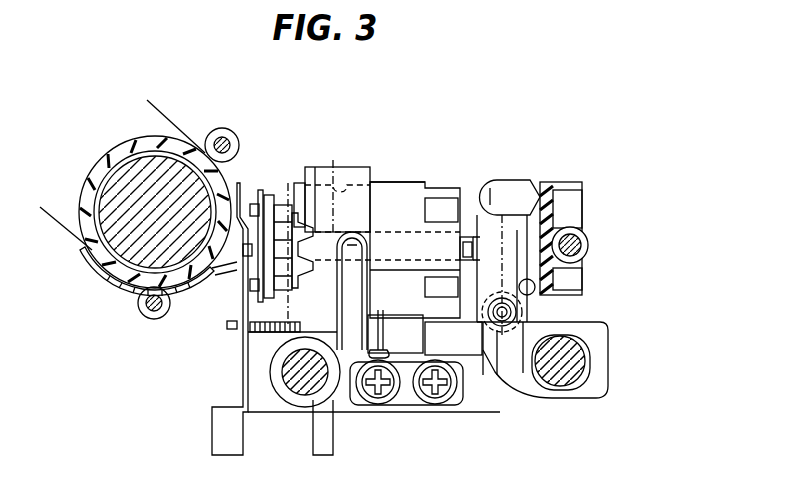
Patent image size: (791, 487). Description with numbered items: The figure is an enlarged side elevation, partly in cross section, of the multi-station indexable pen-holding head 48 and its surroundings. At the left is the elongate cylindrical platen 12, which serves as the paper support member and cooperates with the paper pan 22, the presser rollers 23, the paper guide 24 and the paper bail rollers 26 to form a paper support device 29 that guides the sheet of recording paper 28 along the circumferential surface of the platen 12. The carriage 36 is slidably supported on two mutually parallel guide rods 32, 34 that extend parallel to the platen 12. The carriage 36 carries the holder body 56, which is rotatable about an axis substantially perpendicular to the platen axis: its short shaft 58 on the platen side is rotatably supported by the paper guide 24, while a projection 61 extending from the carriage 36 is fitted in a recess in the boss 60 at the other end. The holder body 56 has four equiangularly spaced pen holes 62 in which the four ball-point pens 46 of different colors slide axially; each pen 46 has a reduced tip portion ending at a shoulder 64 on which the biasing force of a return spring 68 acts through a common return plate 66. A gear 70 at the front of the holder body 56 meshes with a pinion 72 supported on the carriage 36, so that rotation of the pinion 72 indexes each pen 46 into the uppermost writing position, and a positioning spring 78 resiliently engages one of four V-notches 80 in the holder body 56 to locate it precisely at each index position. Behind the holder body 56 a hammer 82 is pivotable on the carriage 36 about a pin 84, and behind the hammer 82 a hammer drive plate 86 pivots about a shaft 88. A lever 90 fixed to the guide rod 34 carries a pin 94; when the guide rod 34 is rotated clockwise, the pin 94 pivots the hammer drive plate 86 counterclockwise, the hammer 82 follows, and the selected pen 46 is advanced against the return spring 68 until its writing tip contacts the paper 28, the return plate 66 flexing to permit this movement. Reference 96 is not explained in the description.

The platen 12 is at (126, 150).
The paper pan 22 is at (110, 290).
The presser rollers 23 is at (148, 314).
The paper guide 24 is at (243, 290).
The paper bail rollers 26 is at (224, 128).
The sheet of recording paper 28 is at (152, 108).
The paper support device 29 is at (200, 82).
The guide rod 32 is at (292, 388).
The guide rod 34 is at (567, 390).
The carriage 36 is at (490, 368).
The ball-point pens 46 is at (440, 192).
The multi-station indexable pen-holding head 48 is at (415, 135).
The holder body 56 is at (362, 167).
The short shaft 58 is at (247, 255).
The boss 60 is at (468, 237).
The projection 61 is at (479, 237).
The pen holes 62 is at (335, 163).
The shoulder 64 is at (291, 183).
The return plate 66 is at (290, 188).
The return spring 68 is at (261, 190).
The gear 70 is at (299, 183).
The pinion 72 is at (232, 329).
The positioning spring 78 is at (342, 402).
The V-notches 80 is at (372, 238).
The hammer 82 is at (520, 180).
The pin 84 is at (511, 345).
The hammer drive plate 86 is at (572, 187).
The shaft 88 is at (582, 240).
The lever 90 is at (562, 305).
The pin 94 is at (570, 313).
The switch assembly 96 is at (608, 192).